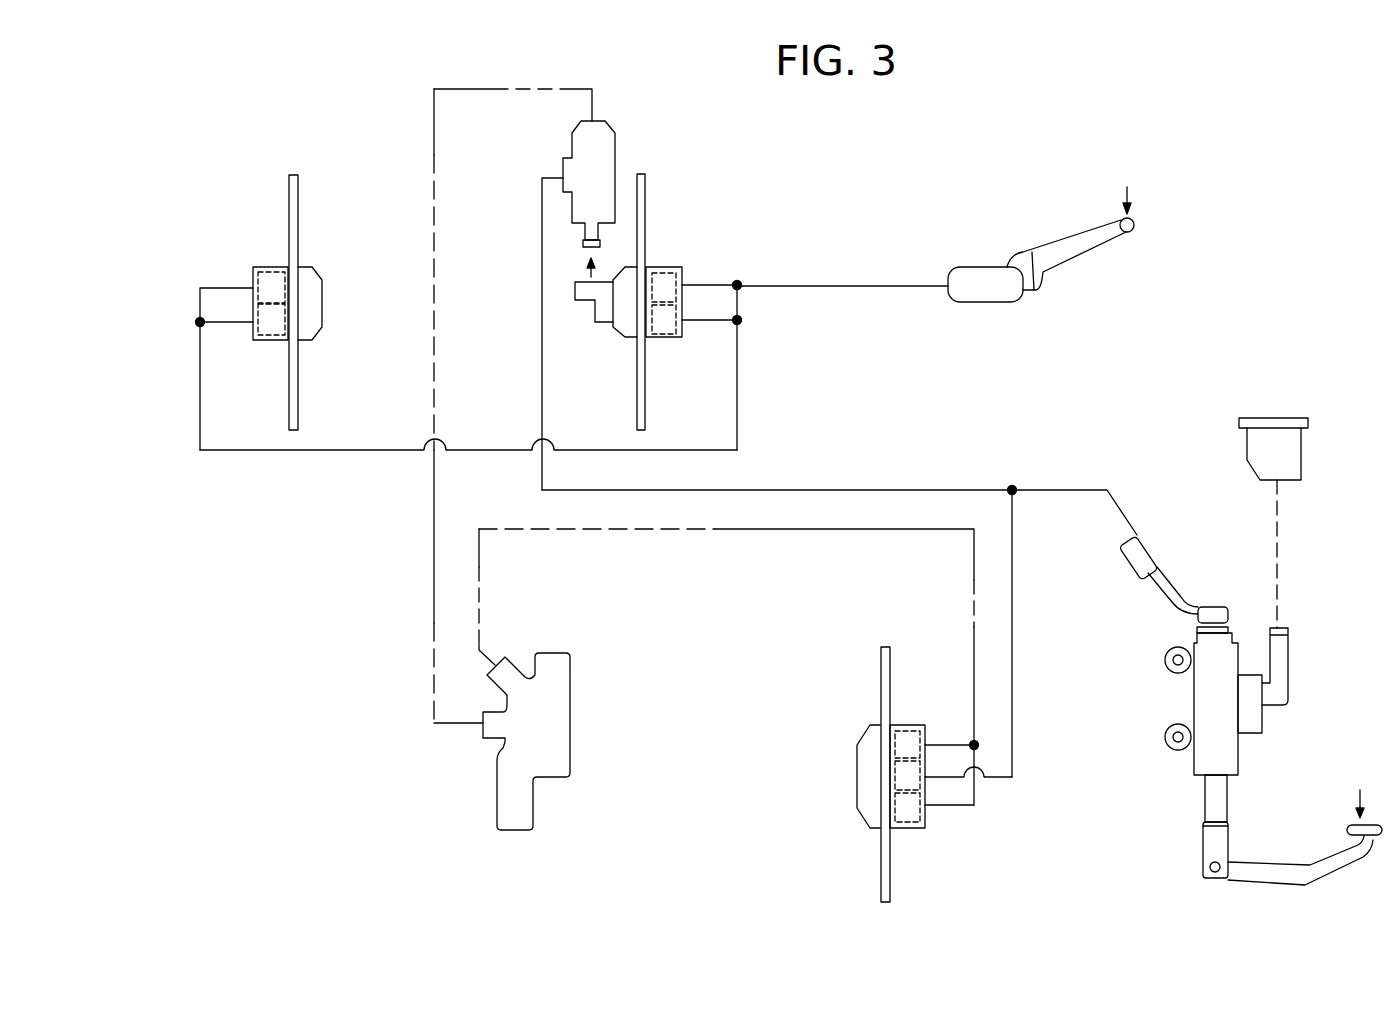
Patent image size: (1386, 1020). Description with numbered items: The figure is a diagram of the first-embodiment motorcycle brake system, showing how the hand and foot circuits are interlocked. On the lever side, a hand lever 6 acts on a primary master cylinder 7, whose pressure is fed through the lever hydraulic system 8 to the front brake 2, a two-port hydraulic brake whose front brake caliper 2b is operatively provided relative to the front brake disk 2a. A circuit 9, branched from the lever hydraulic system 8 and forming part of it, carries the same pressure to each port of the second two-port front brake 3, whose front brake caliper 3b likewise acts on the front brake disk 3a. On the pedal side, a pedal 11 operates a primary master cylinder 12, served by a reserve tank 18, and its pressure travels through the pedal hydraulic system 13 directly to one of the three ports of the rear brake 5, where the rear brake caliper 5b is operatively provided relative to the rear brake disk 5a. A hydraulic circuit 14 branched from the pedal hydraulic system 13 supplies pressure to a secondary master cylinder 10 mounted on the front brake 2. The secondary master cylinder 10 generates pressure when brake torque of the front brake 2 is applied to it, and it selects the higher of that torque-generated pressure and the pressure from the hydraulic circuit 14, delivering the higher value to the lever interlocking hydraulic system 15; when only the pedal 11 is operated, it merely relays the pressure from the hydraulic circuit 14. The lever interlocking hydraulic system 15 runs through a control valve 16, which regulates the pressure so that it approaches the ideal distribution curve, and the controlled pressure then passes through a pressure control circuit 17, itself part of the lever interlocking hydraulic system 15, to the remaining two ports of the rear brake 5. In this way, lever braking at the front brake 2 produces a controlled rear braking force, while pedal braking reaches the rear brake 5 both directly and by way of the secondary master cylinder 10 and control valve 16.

The front brake 2 is at (661, 256).
The front brake disk 2a is at (645, 414).
The front brake caliper 2b is at (672, 339).
The front brake 3 is at (259, 252).
The front brake disk 3a is at (288, 391).
The front brake caliper 3b is at (252, 342).
The rear brake 5 is at (845, 814).
The rear brake disk 5a is at (880, 673).
The rear brake caliper 5b is at (862, 755).
The lever 6 is at (1082, 260).
The primary master cylinder 7 is at (990, 296).
The lever hydraulic system 8 is at (868, 284).
The circuit 9 is at (335, 452).
The secondary master cylinder 10 is at (545, 289).
The pedal 11 is at (1350, 828).
The primary master cylinder 12 is at (1190, 693).
The pedal hydraulic system 13 is at (1050, 488).
The hydraulic circuit 14 is at (839, 489).
The lever interlocking hydraulic system 15 is at (432, 626).
The control valve 16 is at (570, 724).
The pressure control circuit 17 is at (770, 531).
The reserve tank 18 is at (1290, 482).